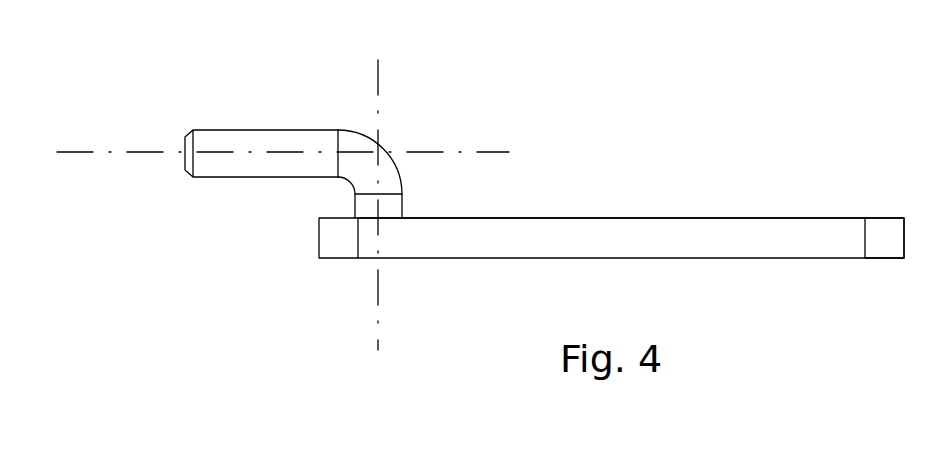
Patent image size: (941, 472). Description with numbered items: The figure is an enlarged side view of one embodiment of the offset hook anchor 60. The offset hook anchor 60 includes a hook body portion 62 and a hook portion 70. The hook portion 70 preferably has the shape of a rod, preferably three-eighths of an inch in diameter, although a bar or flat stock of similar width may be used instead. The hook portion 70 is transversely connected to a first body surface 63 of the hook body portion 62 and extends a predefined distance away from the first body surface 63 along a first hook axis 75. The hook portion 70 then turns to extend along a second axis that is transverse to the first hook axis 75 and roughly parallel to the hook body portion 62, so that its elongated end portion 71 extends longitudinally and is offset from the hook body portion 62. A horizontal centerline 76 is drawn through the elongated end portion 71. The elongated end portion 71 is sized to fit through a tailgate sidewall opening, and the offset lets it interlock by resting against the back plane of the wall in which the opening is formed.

The offset hook anchor 60 is at (621, 151).
The hook body portion 62 is at (863, 218).
The first body surface 63 is at (703, 217).
The hook portion 70 is at (280, 156).
The elongated end portion 71 is at (247, 177).
The first hook axis 75 is at (380, 314).
The horizontal axis 76 is at (115, 153).